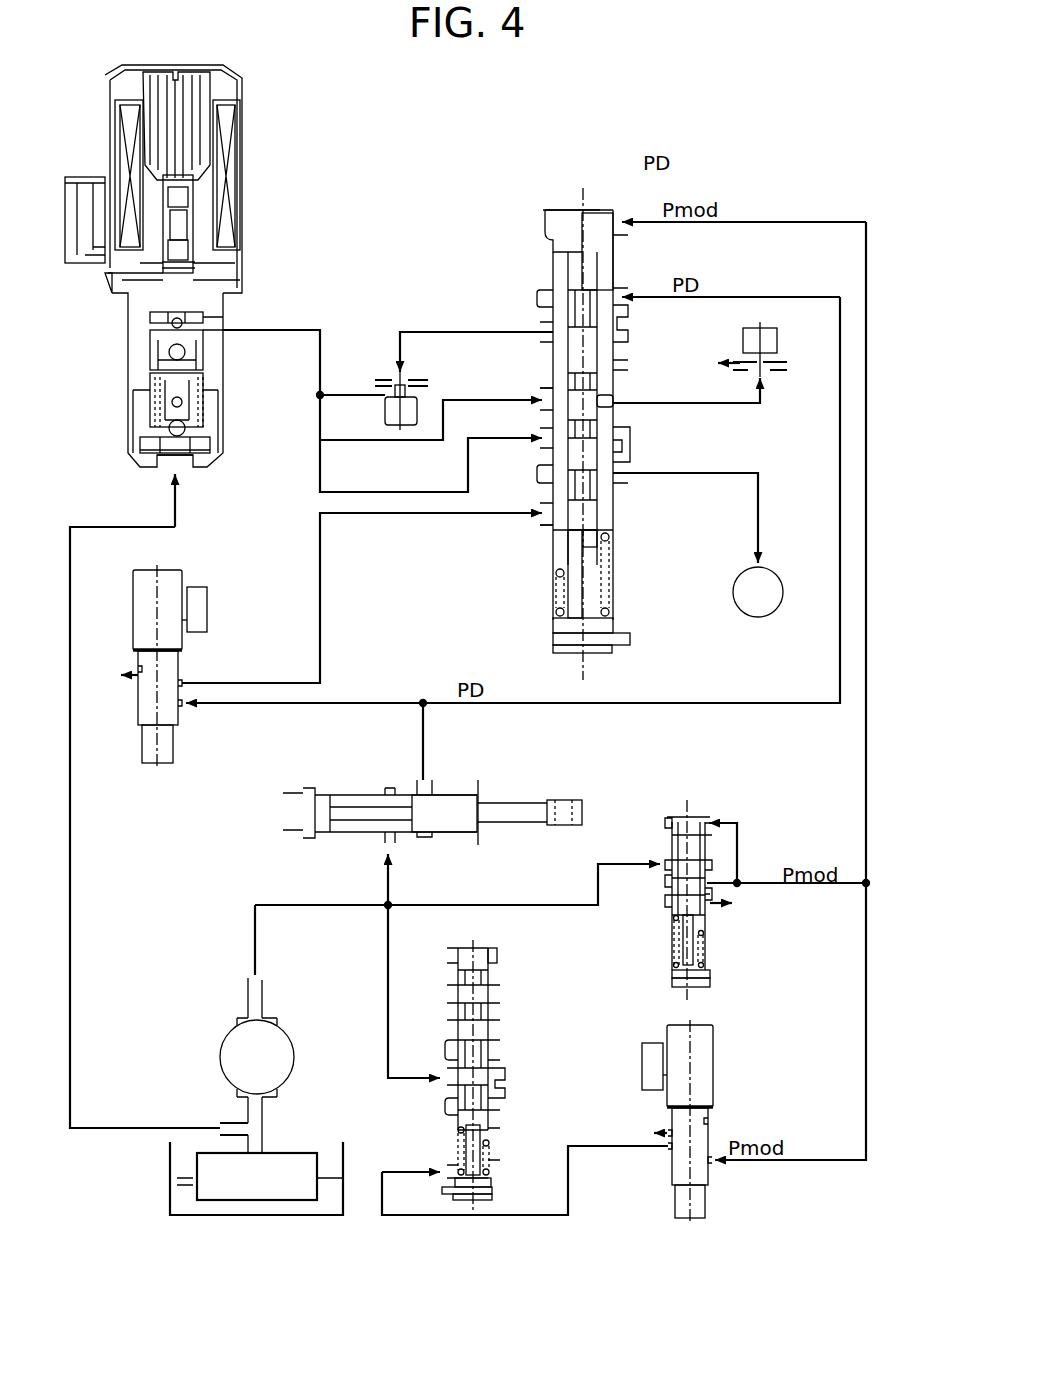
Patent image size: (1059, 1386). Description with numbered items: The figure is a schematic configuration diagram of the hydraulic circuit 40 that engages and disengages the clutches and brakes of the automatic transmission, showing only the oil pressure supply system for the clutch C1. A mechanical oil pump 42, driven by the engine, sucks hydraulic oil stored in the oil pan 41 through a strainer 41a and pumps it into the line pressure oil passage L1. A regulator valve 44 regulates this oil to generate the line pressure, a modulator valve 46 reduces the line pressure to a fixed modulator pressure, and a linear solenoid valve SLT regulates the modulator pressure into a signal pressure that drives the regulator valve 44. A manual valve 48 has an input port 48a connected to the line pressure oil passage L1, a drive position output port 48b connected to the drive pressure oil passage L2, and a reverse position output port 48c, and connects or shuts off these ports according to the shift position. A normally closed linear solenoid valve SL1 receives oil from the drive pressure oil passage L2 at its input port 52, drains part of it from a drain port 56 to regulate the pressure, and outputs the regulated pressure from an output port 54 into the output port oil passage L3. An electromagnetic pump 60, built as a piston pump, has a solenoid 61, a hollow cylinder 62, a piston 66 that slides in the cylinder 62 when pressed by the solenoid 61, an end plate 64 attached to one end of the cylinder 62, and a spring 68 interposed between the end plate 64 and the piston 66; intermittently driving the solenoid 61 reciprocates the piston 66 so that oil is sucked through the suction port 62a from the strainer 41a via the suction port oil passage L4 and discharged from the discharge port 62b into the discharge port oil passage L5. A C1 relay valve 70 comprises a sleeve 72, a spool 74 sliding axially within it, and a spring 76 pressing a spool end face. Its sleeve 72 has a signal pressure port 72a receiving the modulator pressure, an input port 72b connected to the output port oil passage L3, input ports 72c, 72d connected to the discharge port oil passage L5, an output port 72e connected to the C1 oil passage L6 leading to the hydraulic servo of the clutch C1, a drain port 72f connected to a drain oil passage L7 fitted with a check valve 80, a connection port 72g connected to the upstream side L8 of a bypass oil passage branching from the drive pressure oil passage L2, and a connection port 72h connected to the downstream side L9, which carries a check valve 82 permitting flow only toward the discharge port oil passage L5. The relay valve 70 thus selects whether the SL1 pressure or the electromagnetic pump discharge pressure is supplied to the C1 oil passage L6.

The hydraulic circuit 40 is at (752, 82).
The oil pan 41 is at (170, 1165).
The strainer 41a is at (312, 1140).
The mechanical oil pump 42 is at (283, 1032).
The regulator valve 44 is at (505, 970).
The modulator valve 46 is at (747, 857).
The manual valve 48 is at (537, 792).
The input port 48a is at (393, 845).
The drive position output port 48b is at (420, 780).
The reverse position output port 48c is at (303, 843).
The input port 52 is at (182, 707).
The output port 54 is at (185, 683).
The drain port 56 is at (138, 668).
The electromagnetic pump 60 is at (255, 92).
The solenoid 61 is at (246, 165).
The cylinder 62 is at (140, 307).
The suction port 62a is at (162, 468).
The discharge port 62b is at (225, 323).
The end plate 64 is at (207, 462).
The piston 66 is at (157, 345).
The spring 68 is at (157, 387).
The C1 relay valve 70 is at (500, 225).
The sleeve 72 is at (570, 206).
The signal pressure port 72a is at (620, 208).
The input port 72b is at (542, 525).
The input port 72c is at (542, 448).
The input port 72d is at (540, 392).
The output port 72e is at (622, 462).
The drain port 72f is at (614, 412).
The connection port 72g is at (622, 290).
The connection port 72h is at (540, 322).
The spool 74 is at (568, 240).
The spring 76 is at (614, 573).
The check valve 80 is at (780, 378).
The check valve 82 is at (388, 370).
The line pressure oil passage L1 is at (386, 888).
The drive pressure oil passage L2 is at (425, 735).
The output port oil passage L3 is at (320, 587).
The suction port oil passage L4 is at (72, 985).
The discharge port oil passage L5 is at (320, 458).
The C1 oil passage L6 is at (758, 520).
The drain oil passage L7 is at (742, 403).
The upstream side of bypass oil passage L8 is at (840, 662).
The downstream side of bypass oil passage L9 is at (436, 332).
The linear solenoid valve SL1 is at (223, 617).
The linear solenoid valve SLT is at (712, 1020).
The clutch C1 is at (758, 592).